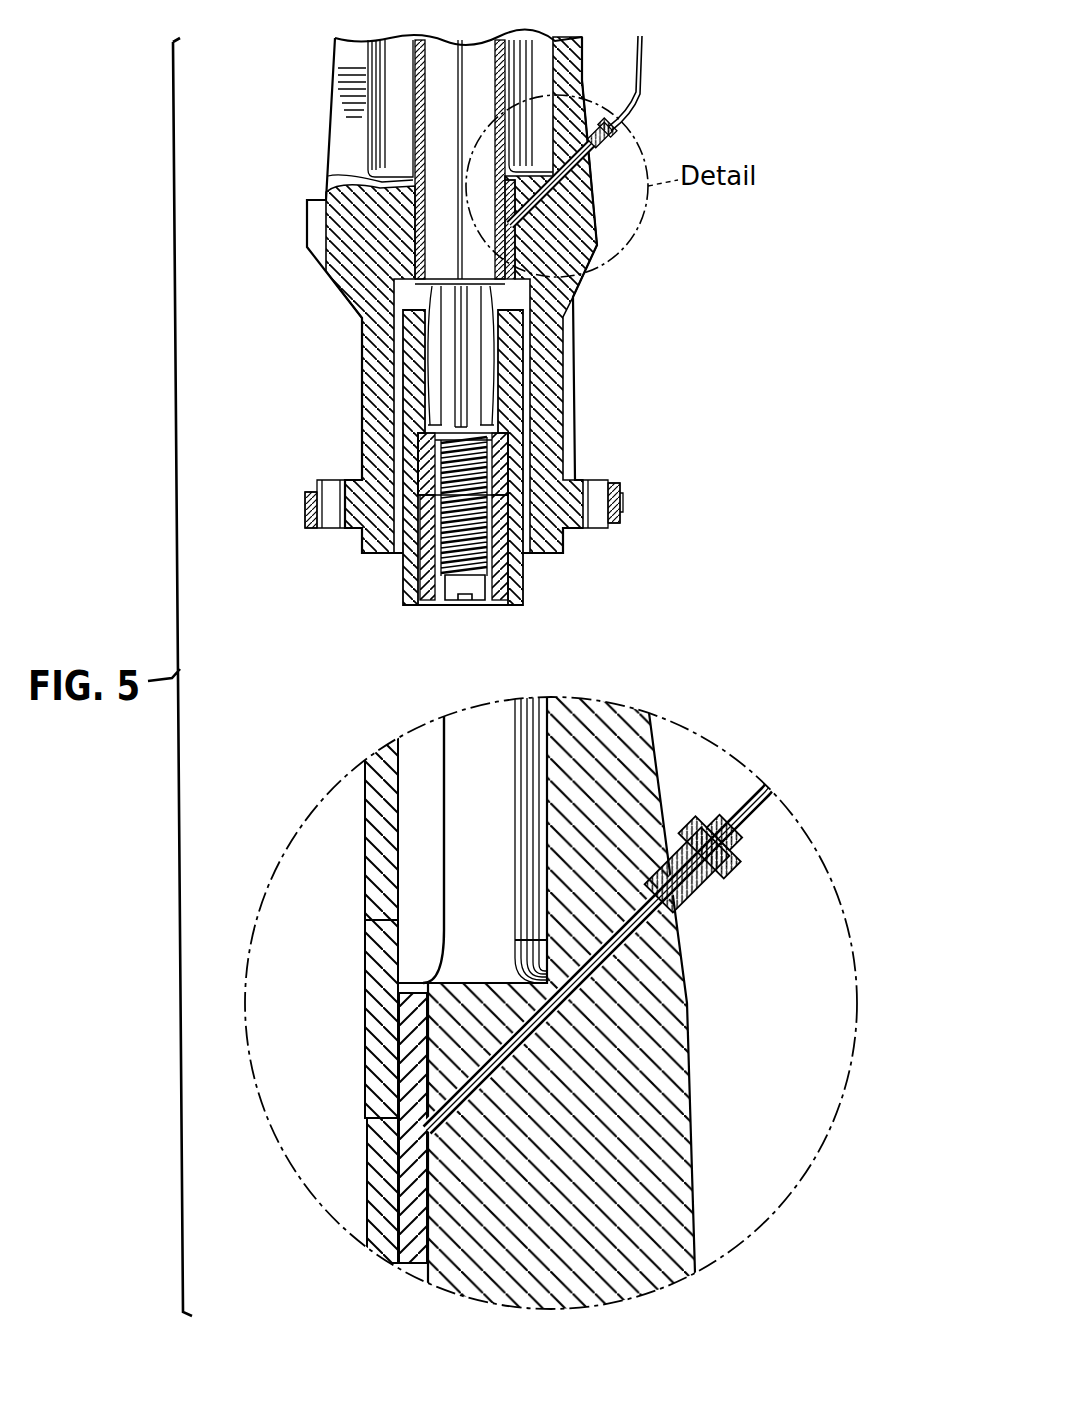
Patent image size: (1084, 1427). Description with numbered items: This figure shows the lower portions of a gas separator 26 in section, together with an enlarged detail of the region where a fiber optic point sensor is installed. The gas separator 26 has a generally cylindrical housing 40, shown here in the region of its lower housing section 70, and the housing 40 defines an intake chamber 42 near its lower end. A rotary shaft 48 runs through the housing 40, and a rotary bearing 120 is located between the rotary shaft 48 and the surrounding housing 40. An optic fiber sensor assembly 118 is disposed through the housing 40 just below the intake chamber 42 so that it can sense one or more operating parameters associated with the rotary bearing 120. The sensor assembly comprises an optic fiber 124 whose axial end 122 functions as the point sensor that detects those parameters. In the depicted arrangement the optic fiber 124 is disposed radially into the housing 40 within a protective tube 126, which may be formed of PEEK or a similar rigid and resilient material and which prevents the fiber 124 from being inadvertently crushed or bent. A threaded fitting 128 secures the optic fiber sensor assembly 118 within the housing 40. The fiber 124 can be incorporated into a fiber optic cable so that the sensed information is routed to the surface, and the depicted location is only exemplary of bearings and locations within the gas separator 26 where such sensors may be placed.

The gas separator 26 is at (336, 358).
The housing 40 is at (316, 229).
The intake chamber 42 is at (372, 78).
The rotary shaft 48 is at (415, 138).
The lower housing section 70 is at (584, 63).
The optic fiber sensor assembly 118 is at (580, 182).
The rotary bearing 120 is at (547, 265).
The axial end 122 is at (427, 1128).
The optic fiber 124 is at (580, 1002).
The protective tube 126 is at (502, 1084).
The threaded fitting 128 is at (622, 142).